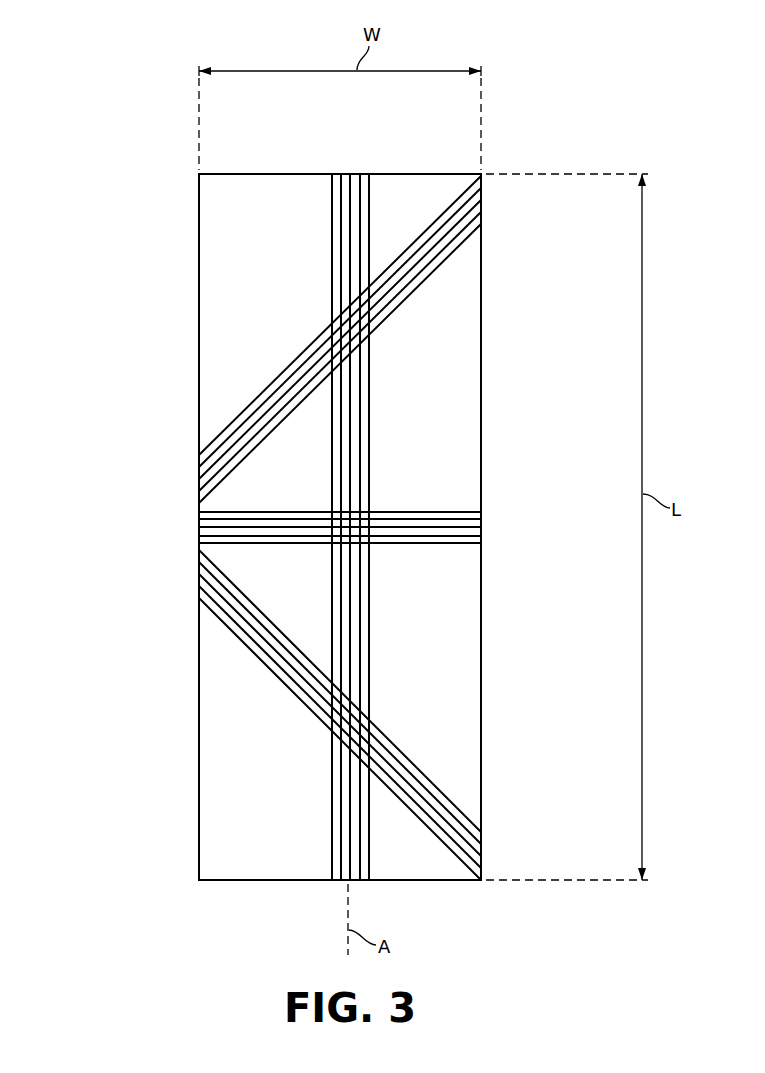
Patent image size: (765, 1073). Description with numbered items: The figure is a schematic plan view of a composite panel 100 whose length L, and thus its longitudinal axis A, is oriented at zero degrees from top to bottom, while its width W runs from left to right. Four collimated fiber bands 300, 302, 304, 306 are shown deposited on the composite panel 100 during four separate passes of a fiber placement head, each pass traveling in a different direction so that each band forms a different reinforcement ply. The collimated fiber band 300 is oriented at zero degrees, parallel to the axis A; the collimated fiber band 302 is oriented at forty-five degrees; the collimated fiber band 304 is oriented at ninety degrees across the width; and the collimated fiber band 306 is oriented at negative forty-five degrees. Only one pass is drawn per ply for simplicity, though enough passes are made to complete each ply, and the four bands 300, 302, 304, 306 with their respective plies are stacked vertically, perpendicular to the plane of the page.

The composite panel 100 is at (123, 22).
The collimated fiber band 300 is at (330, 166).
The collimated fiber band 302 is at (188, 458).
The collimated fiber band 304 is at (489, 510).
The collimated fiber band 306 is at (188, 548).